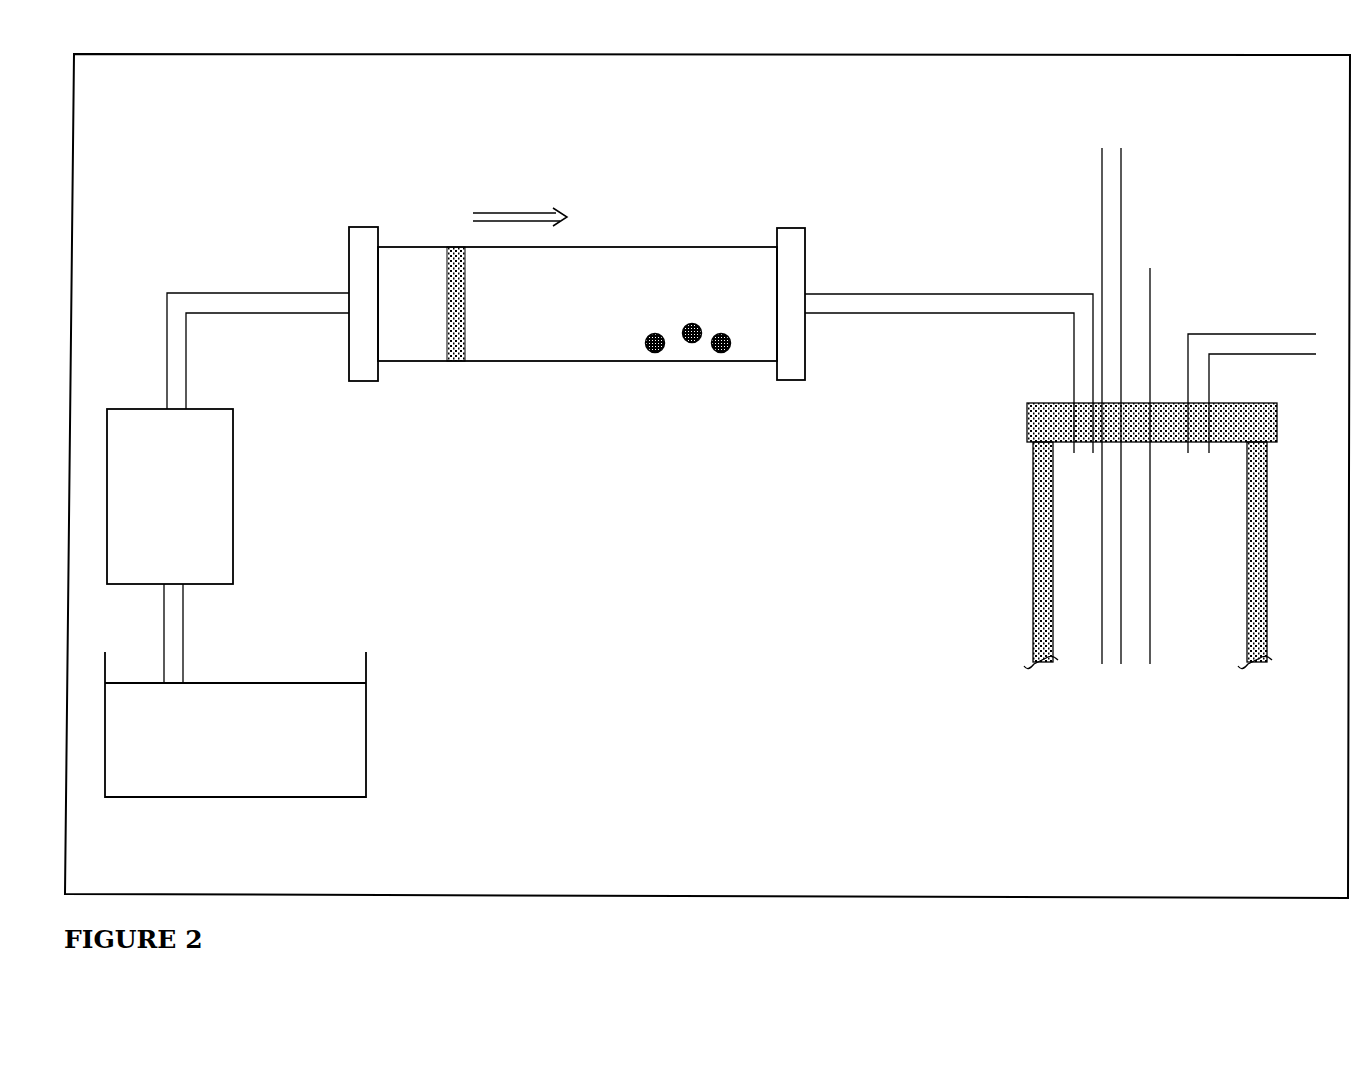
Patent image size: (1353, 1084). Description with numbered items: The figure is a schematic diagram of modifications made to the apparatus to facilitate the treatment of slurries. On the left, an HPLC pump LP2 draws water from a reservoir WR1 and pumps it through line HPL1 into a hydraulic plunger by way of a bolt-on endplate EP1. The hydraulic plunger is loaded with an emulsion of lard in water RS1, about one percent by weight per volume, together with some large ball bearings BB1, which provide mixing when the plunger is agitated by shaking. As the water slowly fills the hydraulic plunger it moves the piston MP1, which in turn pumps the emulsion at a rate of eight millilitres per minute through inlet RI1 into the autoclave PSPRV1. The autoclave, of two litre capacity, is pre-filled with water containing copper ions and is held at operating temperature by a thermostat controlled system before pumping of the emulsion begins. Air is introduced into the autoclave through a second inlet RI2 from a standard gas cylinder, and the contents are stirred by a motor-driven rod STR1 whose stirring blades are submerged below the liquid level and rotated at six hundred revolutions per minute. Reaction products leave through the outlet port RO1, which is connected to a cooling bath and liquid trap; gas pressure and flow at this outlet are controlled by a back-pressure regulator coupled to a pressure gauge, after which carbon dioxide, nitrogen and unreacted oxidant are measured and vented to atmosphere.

The line HPL1 is at (258, 336).
The bolt-on endplate EP1 is at (360, 390).
The emulsion of lard in water RS1 is at (635, 275).
The piston MP1 is at (456, 237).
The ball bearings BB1 is at (701, 380).
The inlet RI1 is at (949, 358).
The inlet RI2 is at (1112, 386).
The motor-driven rod STR1 is at (1155, 445).
The outlet port RO1 is at (1252, 379).
The autoclave PSPRV1 is at (1150, 560).
The HPLC pump LP2 is at (170, 496).
The reservoir WR1 is at (281, 724).